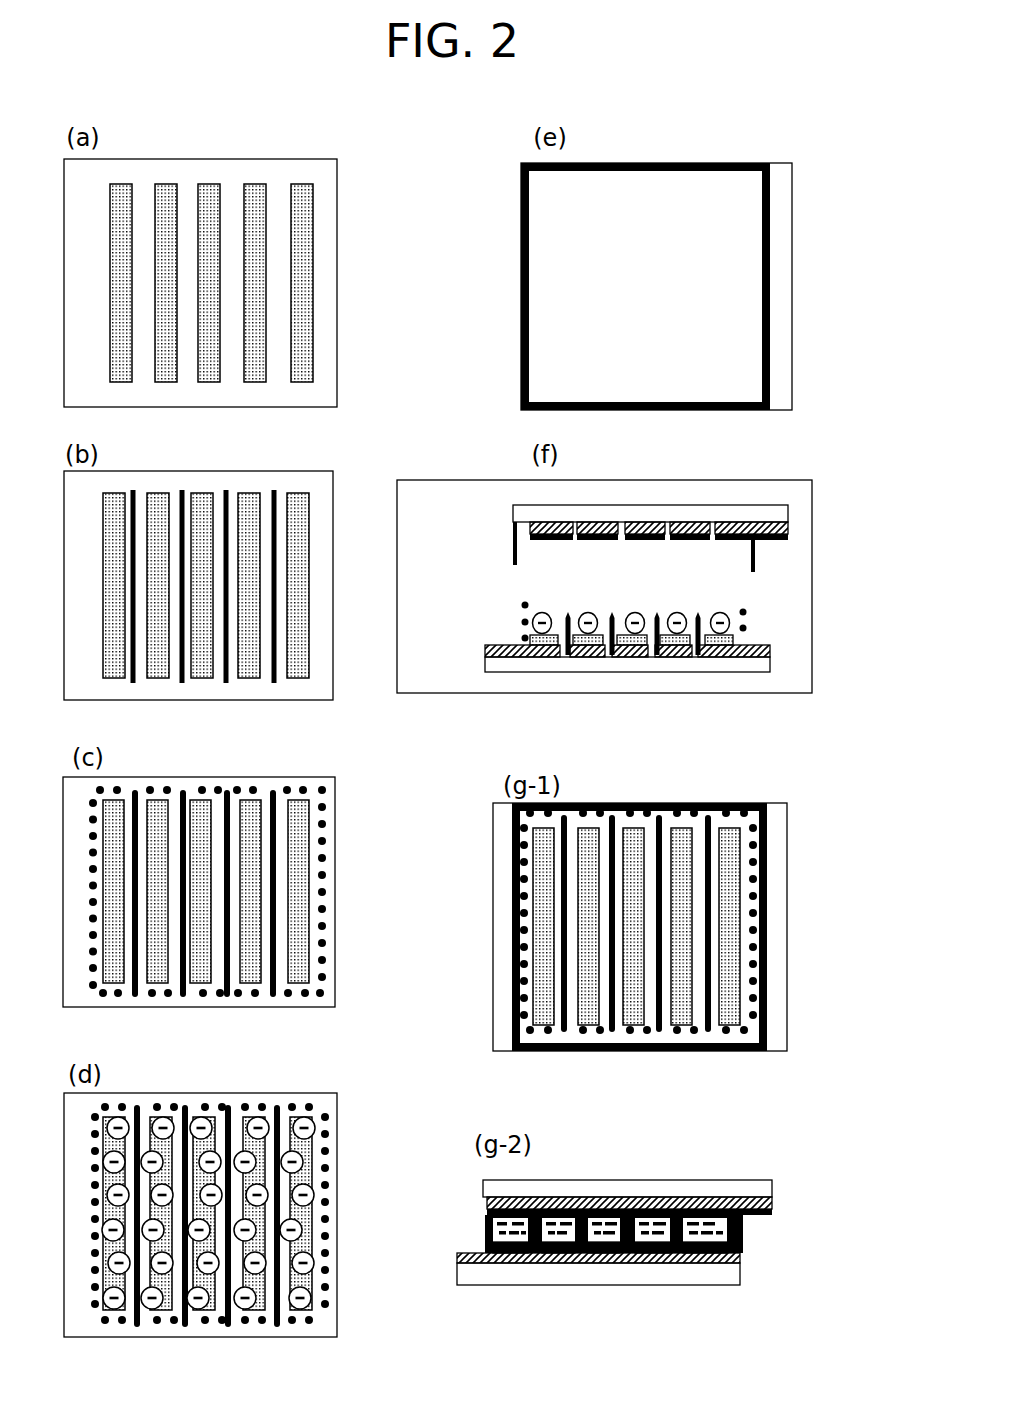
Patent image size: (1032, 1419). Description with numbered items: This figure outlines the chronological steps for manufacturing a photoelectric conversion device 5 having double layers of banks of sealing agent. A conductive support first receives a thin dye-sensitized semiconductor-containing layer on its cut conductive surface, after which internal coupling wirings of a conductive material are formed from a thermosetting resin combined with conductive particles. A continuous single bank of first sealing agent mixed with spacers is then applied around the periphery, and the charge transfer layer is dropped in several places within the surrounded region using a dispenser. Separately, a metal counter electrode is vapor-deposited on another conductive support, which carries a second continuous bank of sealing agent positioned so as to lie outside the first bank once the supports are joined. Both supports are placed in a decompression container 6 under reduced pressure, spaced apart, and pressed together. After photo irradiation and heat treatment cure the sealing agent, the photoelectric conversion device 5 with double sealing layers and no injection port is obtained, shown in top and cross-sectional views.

The photoelectric conversion device 5 is at (782, 905).
The decompression container 6 is at (807, 594).